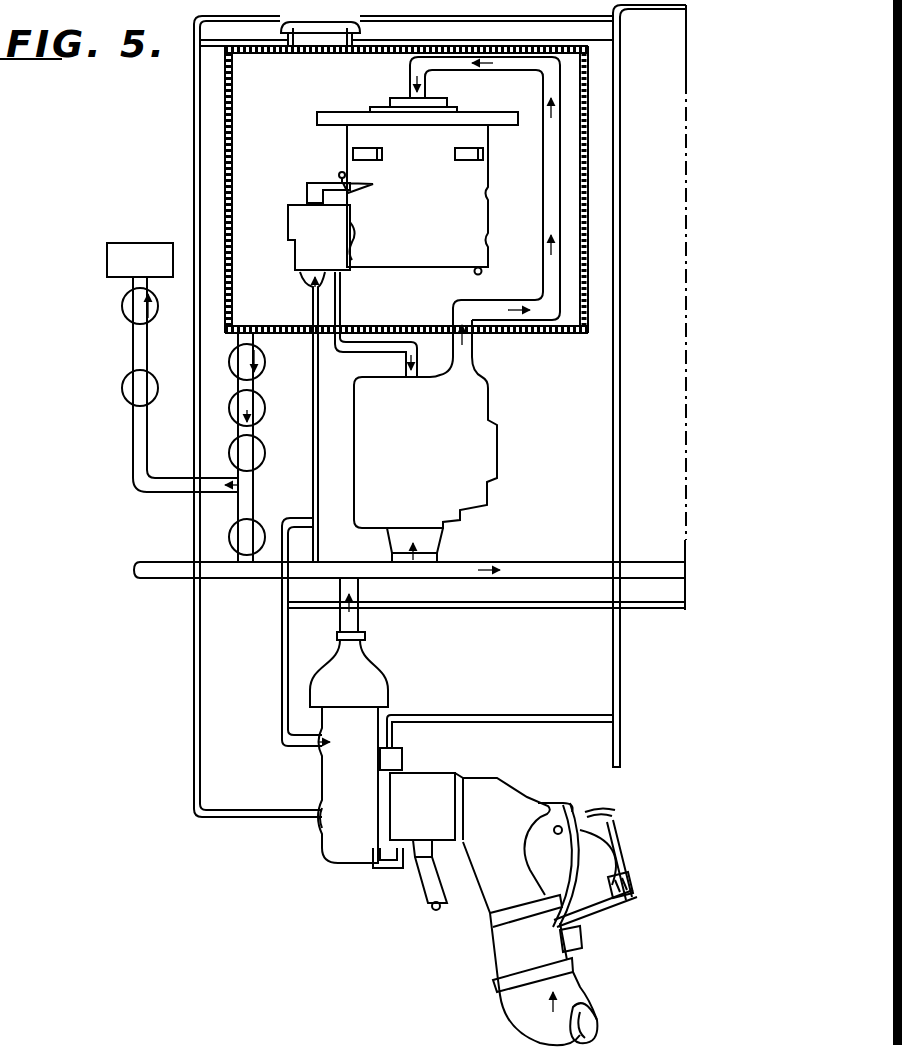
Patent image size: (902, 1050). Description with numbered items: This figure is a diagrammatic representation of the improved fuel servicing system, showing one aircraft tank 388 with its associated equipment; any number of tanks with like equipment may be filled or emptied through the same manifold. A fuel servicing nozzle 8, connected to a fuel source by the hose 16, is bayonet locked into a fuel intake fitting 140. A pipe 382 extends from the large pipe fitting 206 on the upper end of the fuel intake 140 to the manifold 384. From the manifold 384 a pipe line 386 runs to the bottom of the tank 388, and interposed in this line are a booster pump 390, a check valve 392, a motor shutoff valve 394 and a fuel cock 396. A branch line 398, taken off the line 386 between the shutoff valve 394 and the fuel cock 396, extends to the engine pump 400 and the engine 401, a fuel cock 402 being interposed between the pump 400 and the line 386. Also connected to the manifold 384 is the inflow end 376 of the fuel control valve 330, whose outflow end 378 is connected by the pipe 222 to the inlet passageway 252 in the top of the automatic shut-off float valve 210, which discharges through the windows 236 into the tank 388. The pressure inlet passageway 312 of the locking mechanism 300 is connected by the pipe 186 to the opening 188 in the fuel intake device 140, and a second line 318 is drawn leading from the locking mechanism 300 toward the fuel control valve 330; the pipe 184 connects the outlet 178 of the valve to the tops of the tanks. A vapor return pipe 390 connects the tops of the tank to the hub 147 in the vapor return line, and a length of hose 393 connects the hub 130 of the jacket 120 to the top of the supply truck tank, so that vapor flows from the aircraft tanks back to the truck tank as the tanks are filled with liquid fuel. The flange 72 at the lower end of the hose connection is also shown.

The fuel servicing nozzle 8 is at (500, 820).
The hose 16 is at (522, 1018).
The exhaust flange 72 is at (582, 955).
The jacket 120 is at (433, 787).
The hub 130 is at (432, 848).
The fuel intake fitting 140 is at (370, 788).
The hub 147 is at (400, 750).
The outlet 178 is at (330, 820).
The pipe 184 is at (192, 727).
The pipe 186 is at (282, 642).
The opening 188 is at (320, 750).
The large pipe fitting 206 is at (388, 690).
The automatic shut-off float valve 210 is at (438, 169).
The pipe 222 is at (549, 159).
The windows 236 is at (354, 152).
The inlet passageway 252 is at (440, 103).
The locking mechanism 300 is at (334, 239).
The pressure inlet passageway 312 is at (306, 280).
The feed pipe 318 is at (342, 318).
The fuel control valve 330 is at (440, 450).
The inflow end 376 is at (444, 546).
The outflow end 378 is at (478, 358).
The pipe 382 is at (358, 617).
The manifold 384 is at (506, 580).
The pipe line 386 is at (255, 512).
The tank 388 is at (225, 213).
The booster pump 390 is at (262, 362).
The check valve 392 is at (264, 414).
The motor shutoff valve 394 is at (265, 455).
The fuel cock 396 is at (234, 530).
The branch line 398 is at (175, 492).
The engine pump 400 is at (123, 306).
The engine 401 is at (107, 270).
The fuel cock 402 is at (123, 388).
The length of hose 393 is at (433, 908).